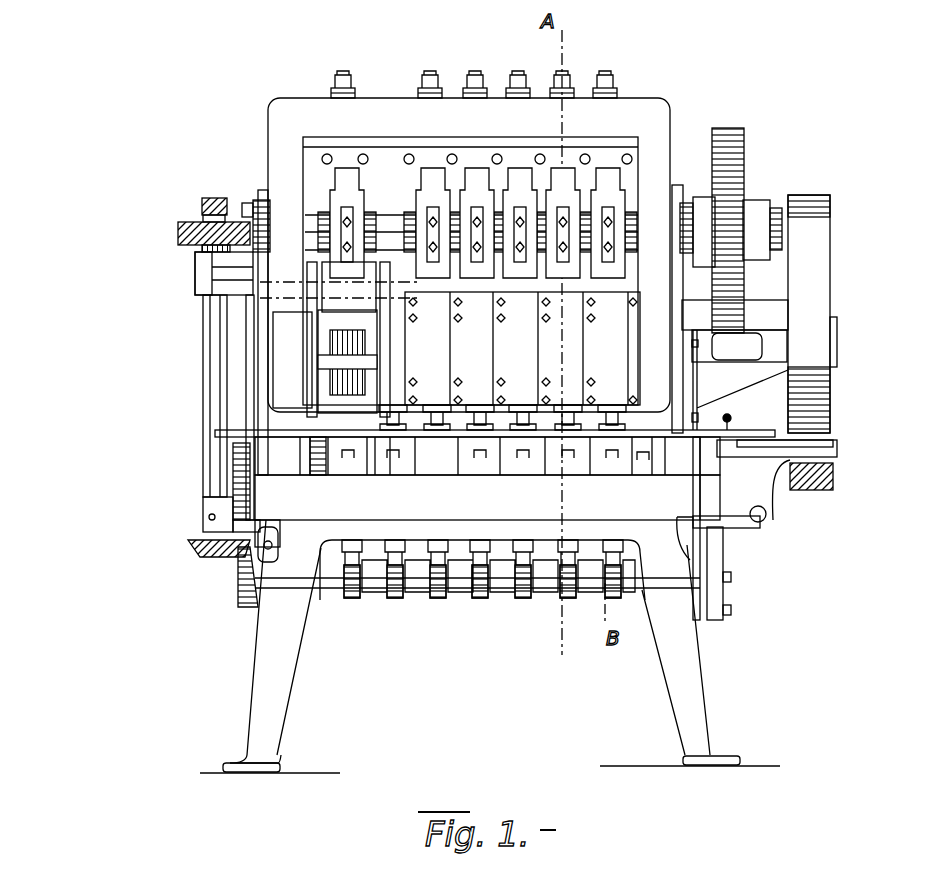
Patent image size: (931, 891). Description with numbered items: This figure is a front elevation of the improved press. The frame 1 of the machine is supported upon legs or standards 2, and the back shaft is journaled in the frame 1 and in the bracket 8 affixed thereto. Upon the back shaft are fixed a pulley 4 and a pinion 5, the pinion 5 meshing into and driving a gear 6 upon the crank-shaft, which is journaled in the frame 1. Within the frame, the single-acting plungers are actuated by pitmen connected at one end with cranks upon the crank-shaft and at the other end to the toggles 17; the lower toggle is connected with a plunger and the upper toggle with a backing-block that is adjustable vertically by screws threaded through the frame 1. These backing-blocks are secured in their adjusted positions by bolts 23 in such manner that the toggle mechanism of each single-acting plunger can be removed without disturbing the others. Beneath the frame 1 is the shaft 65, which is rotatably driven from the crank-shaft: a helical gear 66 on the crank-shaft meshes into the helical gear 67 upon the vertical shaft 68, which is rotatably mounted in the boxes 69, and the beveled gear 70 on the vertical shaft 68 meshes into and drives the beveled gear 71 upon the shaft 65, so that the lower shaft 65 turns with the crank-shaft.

The frame 1 is at (668, 101).
The legs or standards 2 is at (705, 698).
The pulley 4 is at (807, 197).
The pinion 5 is at (738, 343).
The gear 6 is at (741, 128).
The bracket 8 is at (740, 380).
The toggles 17 is at (622, 212).
The bolts 23 is at (630, 153).
The shaft 65 is at (338, 584).
The helical gear 66 is at (212, 197).
The helical gear 67 is at (178, 232).
The vertical shaft 68 is at (204, 353).
The boxes 69 is at (196, 290).
The beveled gear 70 is at (194, 552).
The beveled gear 71 is at (243, 598).